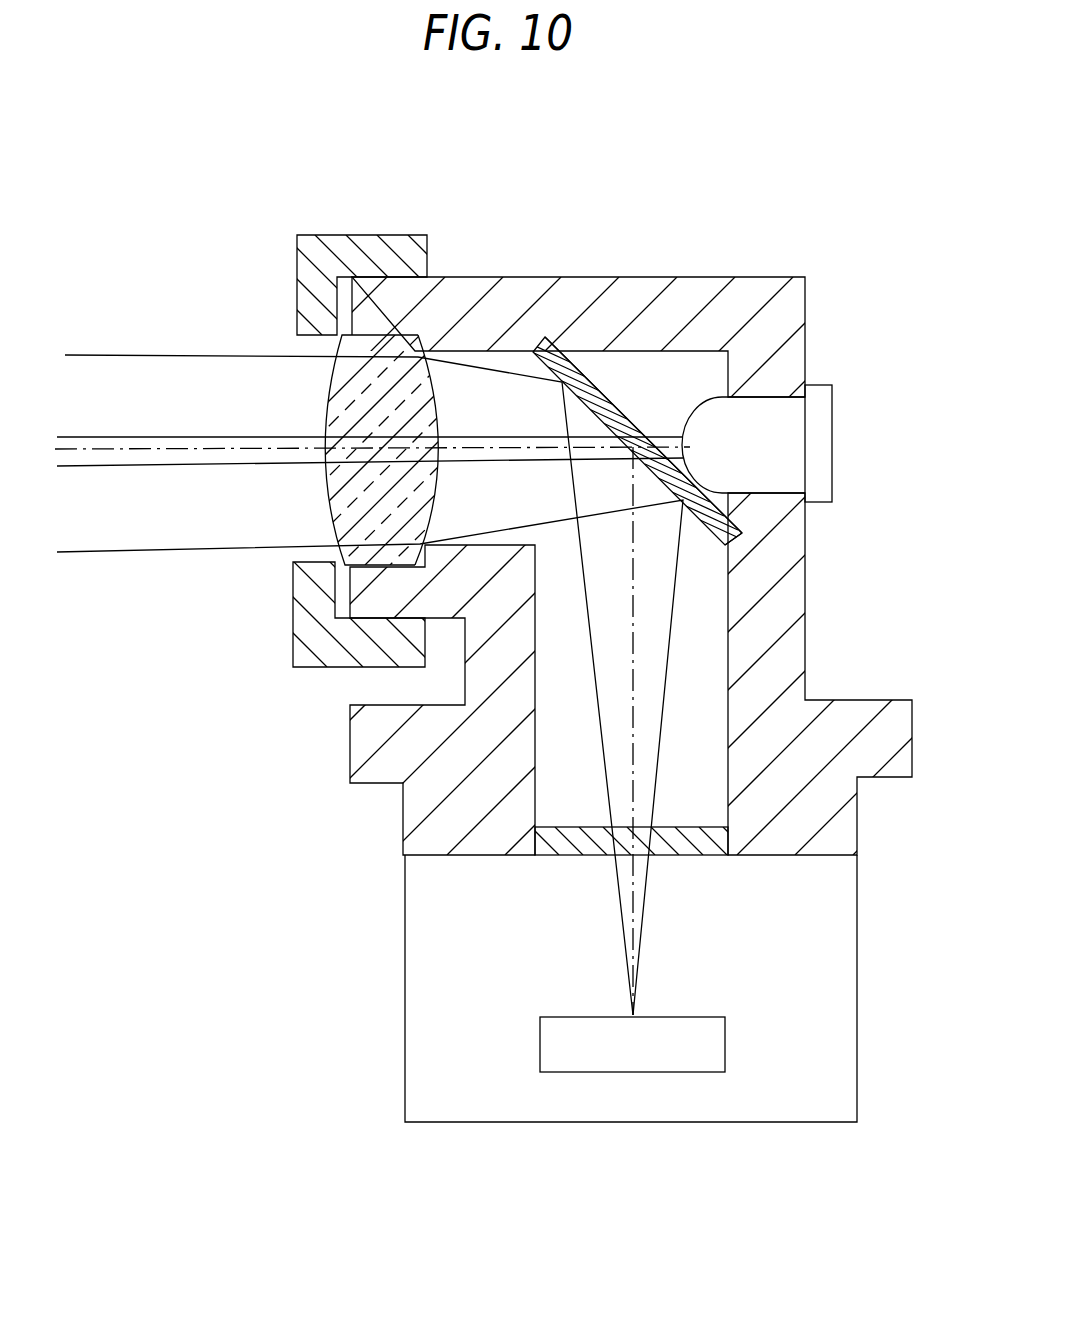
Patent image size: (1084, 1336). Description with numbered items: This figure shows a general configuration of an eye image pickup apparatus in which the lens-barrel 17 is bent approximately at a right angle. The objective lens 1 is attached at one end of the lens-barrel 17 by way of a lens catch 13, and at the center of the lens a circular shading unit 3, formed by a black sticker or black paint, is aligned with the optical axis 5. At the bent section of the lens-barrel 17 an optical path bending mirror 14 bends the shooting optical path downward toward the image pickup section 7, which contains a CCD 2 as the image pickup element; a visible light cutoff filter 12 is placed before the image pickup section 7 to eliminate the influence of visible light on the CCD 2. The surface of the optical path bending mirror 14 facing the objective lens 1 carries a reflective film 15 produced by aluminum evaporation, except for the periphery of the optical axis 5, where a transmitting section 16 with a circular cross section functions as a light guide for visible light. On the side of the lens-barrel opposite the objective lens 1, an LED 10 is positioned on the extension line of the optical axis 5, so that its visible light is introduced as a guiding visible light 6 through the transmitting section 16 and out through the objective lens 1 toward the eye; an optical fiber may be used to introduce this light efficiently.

The objective lens 1 is at (327, 503).
The CCD 2 is at (725, 1040).
The shading unit 3 is at (437, 456).
The optical axis 5 is at (196, 467).
The guiding visible light 6 is at (158, 437).
The image pickup section 7 is at (405, 1010).
The LED 10 is at (785, 440).
The visible light cutoff filter 12 is at (580, 856).
The lens catch 13 is at (340, 252).
The optical path bending mirror 14 is at (578, 372).
The reflective film 15 is at (710, 547).
The transmitting section 16 is at (622, 440).
The lens-barrel 17 is at (850, 718).